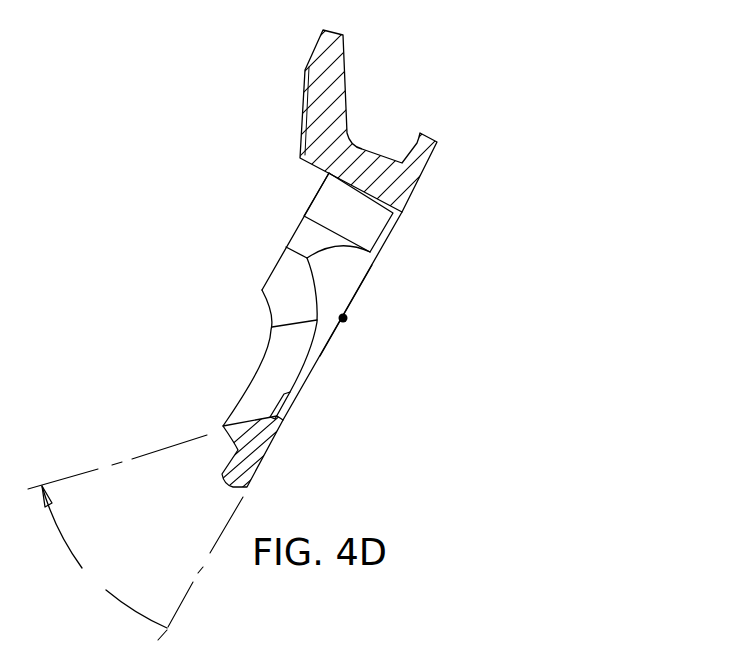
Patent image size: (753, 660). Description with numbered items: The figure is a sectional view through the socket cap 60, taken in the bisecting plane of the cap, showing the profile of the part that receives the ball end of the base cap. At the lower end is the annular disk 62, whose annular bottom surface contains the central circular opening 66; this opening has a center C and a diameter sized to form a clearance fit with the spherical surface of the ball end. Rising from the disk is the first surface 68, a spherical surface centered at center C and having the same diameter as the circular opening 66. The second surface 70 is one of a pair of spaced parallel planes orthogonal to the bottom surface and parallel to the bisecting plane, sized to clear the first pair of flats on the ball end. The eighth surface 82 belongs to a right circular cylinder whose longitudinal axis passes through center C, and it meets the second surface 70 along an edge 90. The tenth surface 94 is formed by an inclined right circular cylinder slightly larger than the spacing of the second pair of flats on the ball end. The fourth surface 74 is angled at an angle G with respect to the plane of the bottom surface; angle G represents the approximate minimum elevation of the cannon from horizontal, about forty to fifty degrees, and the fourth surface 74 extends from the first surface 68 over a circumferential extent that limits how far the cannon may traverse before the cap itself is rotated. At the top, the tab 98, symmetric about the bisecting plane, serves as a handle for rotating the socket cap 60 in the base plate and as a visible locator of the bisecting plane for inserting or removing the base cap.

The socket cap 60 is at (195, 92).
The annular disk 62 is at (222, 476).
The central circular opening 66 is at (362, 302).
The first surface 68 is at (353, 278).
The second surface 70 is at (301, 238).
The fourth surface 74 is at (254, 391).
The eighth surface 82 is at (314, 197).
The edge 90 is at (306, 216).
The tenth surface 94 is at (275, 283).
The tab 98 is at (337, 53).
The center C is at (346, 321).
The angle G is at (135, 537).